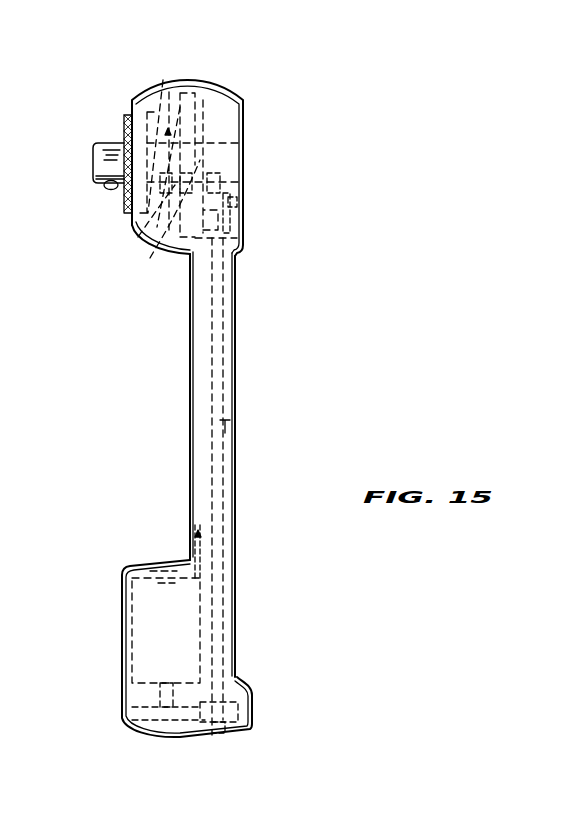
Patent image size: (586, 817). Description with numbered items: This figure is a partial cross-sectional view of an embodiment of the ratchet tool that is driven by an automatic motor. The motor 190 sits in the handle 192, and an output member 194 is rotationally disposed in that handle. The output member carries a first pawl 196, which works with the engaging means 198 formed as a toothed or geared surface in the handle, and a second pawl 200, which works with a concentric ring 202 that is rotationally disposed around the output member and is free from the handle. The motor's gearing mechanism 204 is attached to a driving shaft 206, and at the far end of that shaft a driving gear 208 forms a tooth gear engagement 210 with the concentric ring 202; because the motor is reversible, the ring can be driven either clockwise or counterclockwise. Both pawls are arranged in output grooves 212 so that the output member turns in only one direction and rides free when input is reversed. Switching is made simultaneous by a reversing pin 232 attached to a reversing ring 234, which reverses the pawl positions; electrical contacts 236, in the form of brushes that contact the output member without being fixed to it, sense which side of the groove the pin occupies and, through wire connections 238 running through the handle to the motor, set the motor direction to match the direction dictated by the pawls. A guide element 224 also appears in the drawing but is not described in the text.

The motor 190 is at (148, 622).
The handle 192 is at (199, 393).
The output member 194 is at (98, 185).
The first pawl 196 is at (138, 237).
The engaging means 198 is at (180, 107).
The second pawl 200 is at (150, 258).
The concentric ring 202 is at (197, 105).
The gearing mechanism 204 is at (192, 726).
The driving shaft 206 is at (222, 425).
The driving gear 208 is at (247, 223).
The tooth gear engagement 210 is at (192, 257).
The output grooves 212 is at (243, 141).
The guide member 224 is at (207, 115).
The reversing pin 232 is at (163, 77).
The reversing ring 234 is at (147, 124).
The electrical contacts 236 is at (240, 168).
The wire connections 238 is at (240, 210).